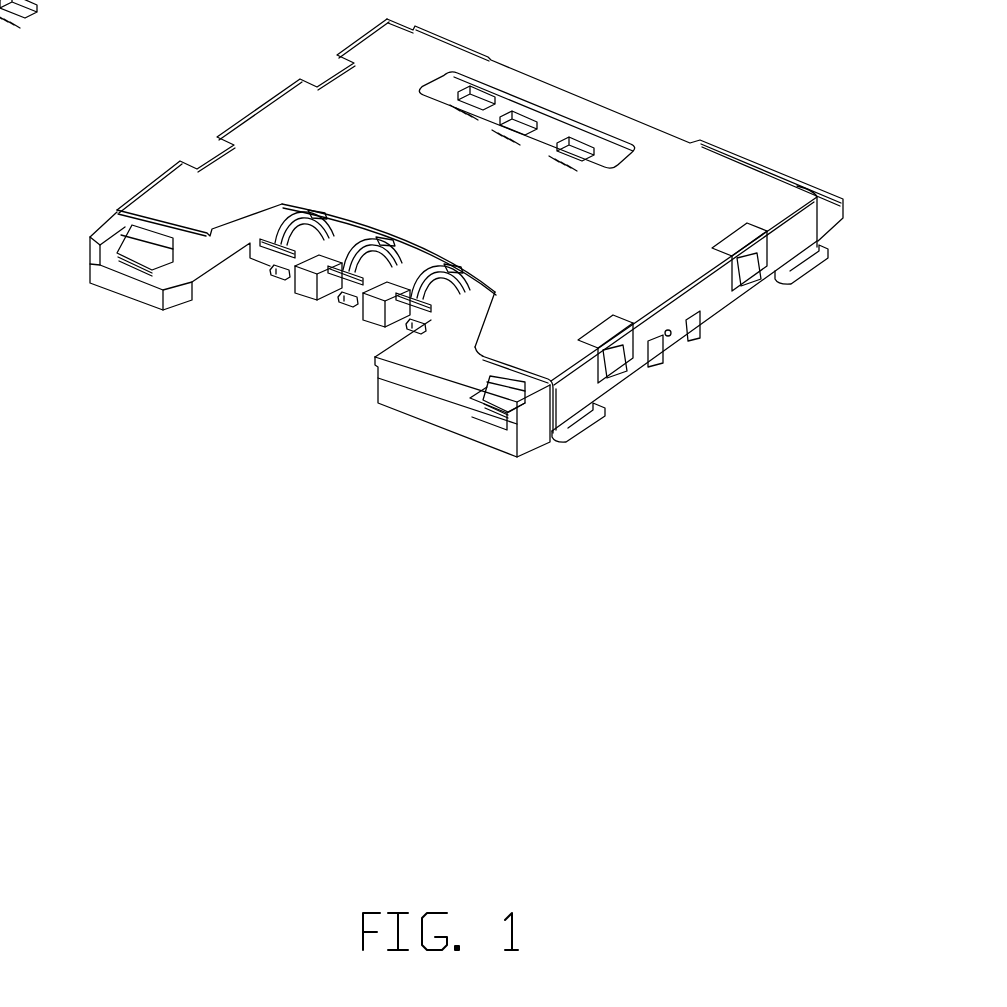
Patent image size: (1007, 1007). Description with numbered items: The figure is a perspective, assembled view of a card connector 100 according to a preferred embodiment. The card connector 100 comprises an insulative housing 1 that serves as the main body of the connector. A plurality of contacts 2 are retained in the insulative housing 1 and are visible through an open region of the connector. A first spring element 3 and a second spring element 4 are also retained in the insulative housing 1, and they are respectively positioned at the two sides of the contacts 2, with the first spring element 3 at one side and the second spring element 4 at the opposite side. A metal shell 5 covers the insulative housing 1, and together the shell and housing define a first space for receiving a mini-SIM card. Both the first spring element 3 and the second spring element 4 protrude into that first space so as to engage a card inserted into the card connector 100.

The card connector 100 is at (232, 92).
The insulative housing 1 is at (130, 288).
The contacts 2 is at (247, 263).
The first spring element 3 is at (152, 233).
The second spring element 4 is at (505, 380).
The metal shell 5 is at (660, 178).